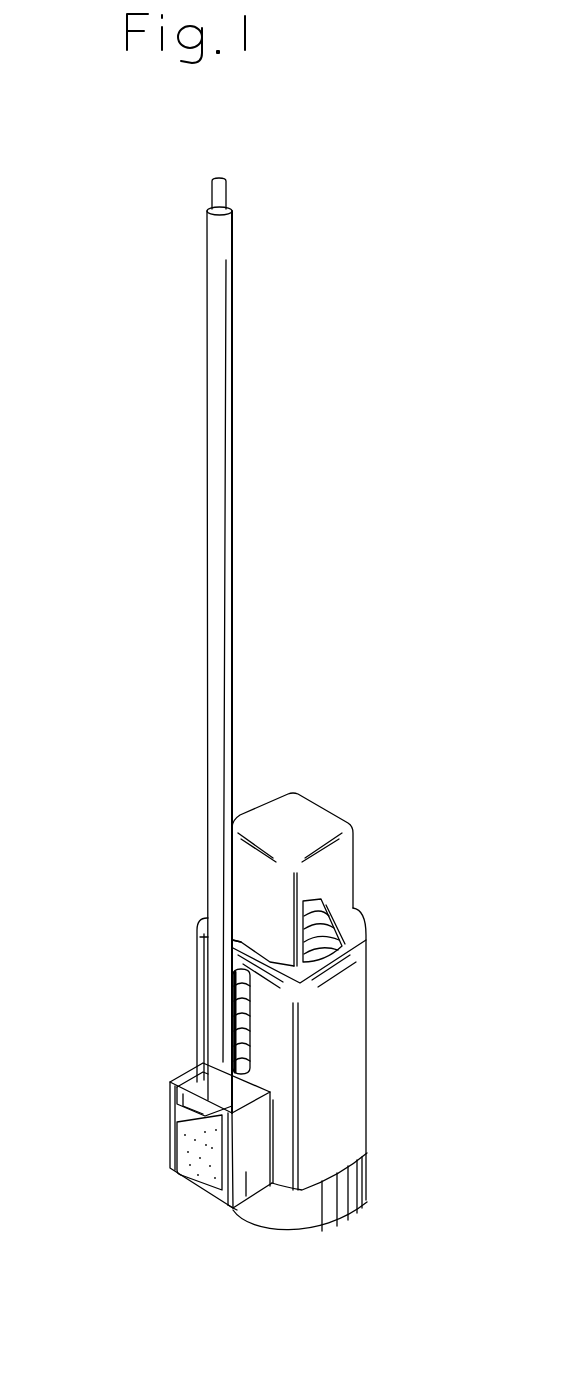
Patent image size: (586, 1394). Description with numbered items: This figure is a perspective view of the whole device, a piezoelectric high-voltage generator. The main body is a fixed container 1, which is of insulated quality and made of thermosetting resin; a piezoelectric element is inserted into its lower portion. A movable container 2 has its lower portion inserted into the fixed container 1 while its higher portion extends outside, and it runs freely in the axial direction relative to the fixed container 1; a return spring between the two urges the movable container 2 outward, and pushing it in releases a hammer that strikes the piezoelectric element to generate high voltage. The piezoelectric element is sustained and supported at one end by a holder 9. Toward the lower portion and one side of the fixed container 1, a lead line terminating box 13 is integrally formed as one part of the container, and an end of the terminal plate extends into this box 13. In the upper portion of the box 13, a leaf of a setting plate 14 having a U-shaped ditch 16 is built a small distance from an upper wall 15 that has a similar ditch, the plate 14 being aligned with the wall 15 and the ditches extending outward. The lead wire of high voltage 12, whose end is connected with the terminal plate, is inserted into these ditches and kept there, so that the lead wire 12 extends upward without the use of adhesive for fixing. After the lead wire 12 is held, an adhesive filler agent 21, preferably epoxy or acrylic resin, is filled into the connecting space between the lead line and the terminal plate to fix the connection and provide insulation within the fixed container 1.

The fixed container 1 is at (353, 1053).
The movable container 2 is at (342, 863).
The holder 9 is at (298, 1212).
The lead wire of high voltage 12 is at (208, 432).
The lead line terminating box 13 is at (233, 1210).
The setting plate 14 is at (197, 1118).
The upper wall 15 is at (250, 1093).
The U-shaped ditch 16 is at (203, 1096).
The adhesive filler agent 21 is at (194, 1167).